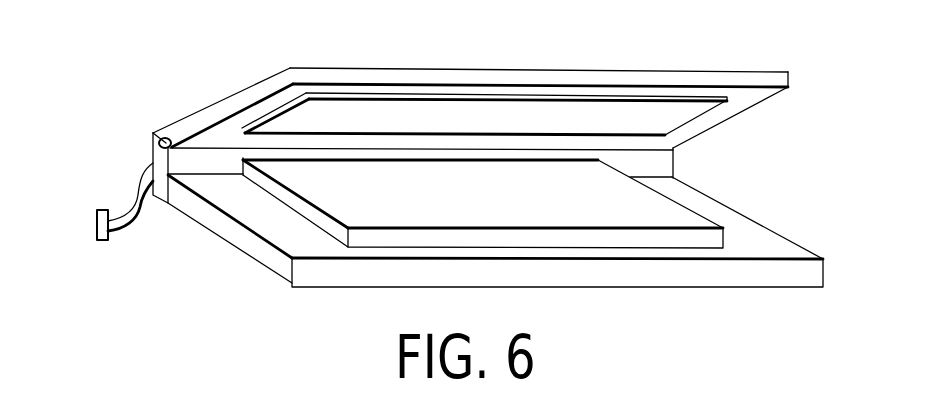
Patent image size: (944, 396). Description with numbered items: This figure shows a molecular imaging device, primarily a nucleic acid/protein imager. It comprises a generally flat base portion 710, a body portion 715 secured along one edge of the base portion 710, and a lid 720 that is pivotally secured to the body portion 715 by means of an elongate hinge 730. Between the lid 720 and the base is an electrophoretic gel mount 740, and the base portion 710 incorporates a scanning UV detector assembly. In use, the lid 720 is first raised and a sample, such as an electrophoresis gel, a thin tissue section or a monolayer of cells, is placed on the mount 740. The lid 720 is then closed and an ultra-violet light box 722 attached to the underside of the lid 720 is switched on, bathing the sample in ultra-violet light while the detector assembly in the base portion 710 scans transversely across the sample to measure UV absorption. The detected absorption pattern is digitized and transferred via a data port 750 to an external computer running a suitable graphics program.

The base portion 710 is at (197, 282).
The body portion 715 is at (664, 165).
The lid 720 is at (222, 112).
The ultra-violet light box 722 is at (493, 112).
The elongate hinge 730 is at (152, 147).
The electrophoretic gel mount 740 is at (682, 220).
The data port 750 is at (97, 227).